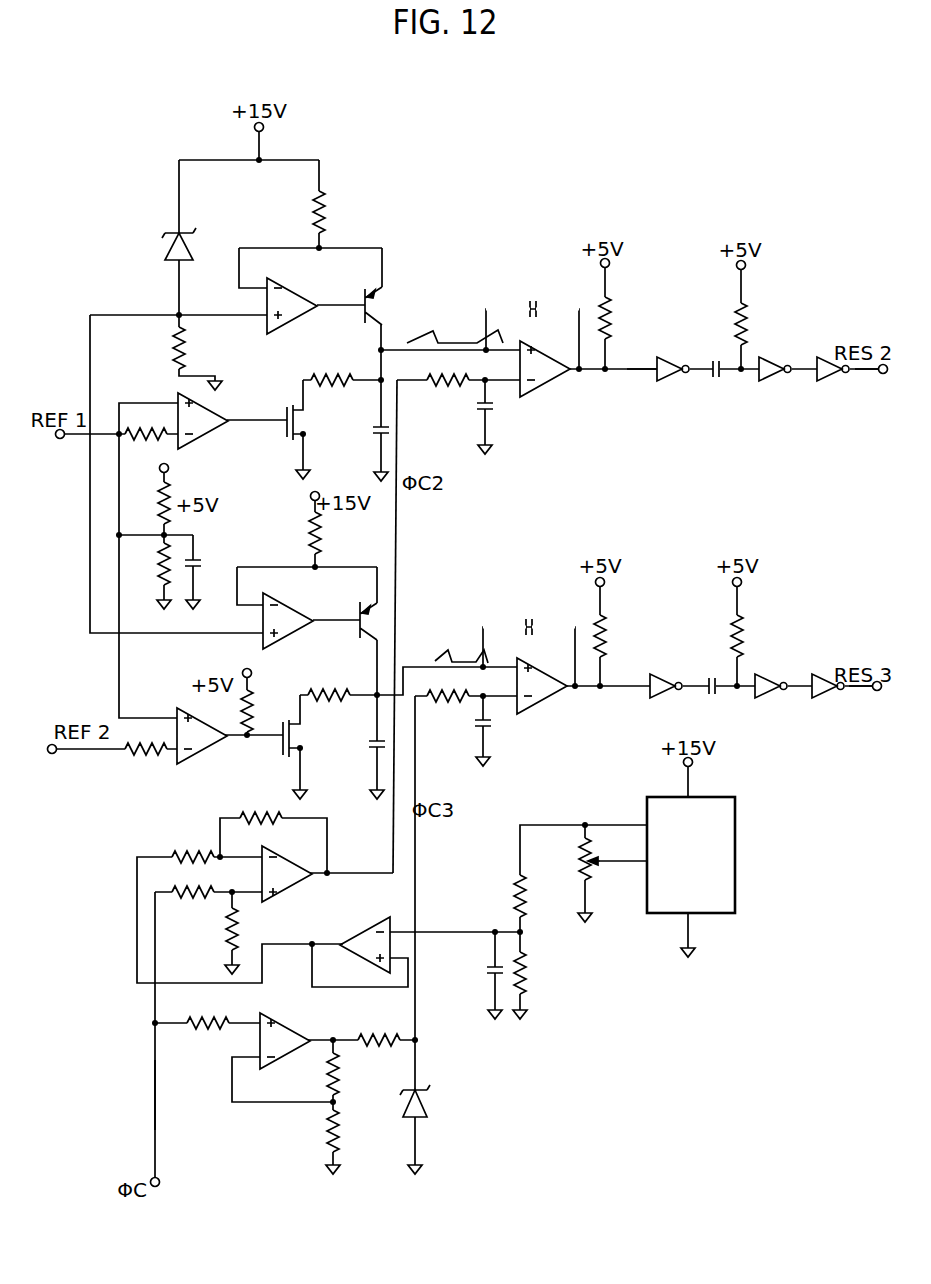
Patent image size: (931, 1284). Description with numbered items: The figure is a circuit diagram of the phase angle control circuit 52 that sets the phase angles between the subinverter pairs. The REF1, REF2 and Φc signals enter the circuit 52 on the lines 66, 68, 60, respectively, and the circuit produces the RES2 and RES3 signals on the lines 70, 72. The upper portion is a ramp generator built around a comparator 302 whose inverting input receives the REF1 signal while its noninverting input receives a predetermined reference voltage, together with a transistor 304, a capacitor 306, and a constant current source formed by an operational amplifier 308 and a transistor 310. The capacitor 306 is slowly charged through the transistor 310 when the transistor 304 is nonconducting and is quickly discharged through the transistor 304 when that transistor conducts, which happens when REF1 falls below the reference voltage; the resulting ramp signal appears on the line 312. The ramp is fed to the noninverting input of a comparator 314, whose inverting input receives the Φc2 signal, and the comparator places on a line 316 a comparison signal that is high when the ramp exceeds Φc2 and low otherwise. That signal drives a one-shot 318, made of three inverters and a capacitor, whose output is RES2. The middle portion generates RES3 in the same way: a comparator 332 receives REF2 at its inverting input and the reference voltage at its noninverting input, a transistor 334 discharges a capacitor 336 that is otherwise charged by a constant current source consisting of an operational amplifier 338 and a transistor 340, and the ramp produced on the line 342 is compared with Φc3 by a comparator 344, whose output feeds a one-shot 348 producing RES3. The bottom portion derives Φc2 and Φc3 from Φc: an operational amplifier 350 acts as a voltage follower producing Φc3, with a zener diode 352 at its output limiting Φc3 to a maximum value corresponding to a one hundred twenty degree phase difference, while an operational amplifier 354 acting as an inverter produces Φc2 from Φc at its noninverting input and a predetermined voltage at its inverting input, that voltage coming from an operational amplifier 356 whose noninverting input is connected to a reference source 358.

The phase angle control circuit 52 is at (595, 212).
The line 60 is at (153, 1082).
The line 66 is at (75, 437).
The line 68 is at (88, 755).
The line 70 is at (863, 376).
The line 72 is at (860, 695).
The comparator 302 is at (200, 437).
The transistor 304 is at (283, 428).
The capacitor 306 is at (378, 427).
The operational amplifier 308 is at (283, 325).
The transistor 310 is at (363, 293).
The line 312 is at (452, 345).
The comparator 314 is at (545, 393).
The line 316 is at (627, 374).
The one-shot 318 is at (768, 342).
The comparator 332 is at (193, 762).
The transistor 334 is at (282, 745).
The capacitor 336 is at (372, 740).
The operational amplifier 338 is at (283, 647).
The transistor 340 is at (358, 616).
The line 342 is at (453, 660).
The comparator 344 is at (537, 708).
The one-shot 348 is at (750, 667).
The operational amplifier 350 is at (296, 1036).
The zener diode 352 is at (432, 1103).
The operational amplifier 354 is at (280, 890).
The operational amplifier 356 is at (391, 919).
The reference source 358 is at (735, 861).